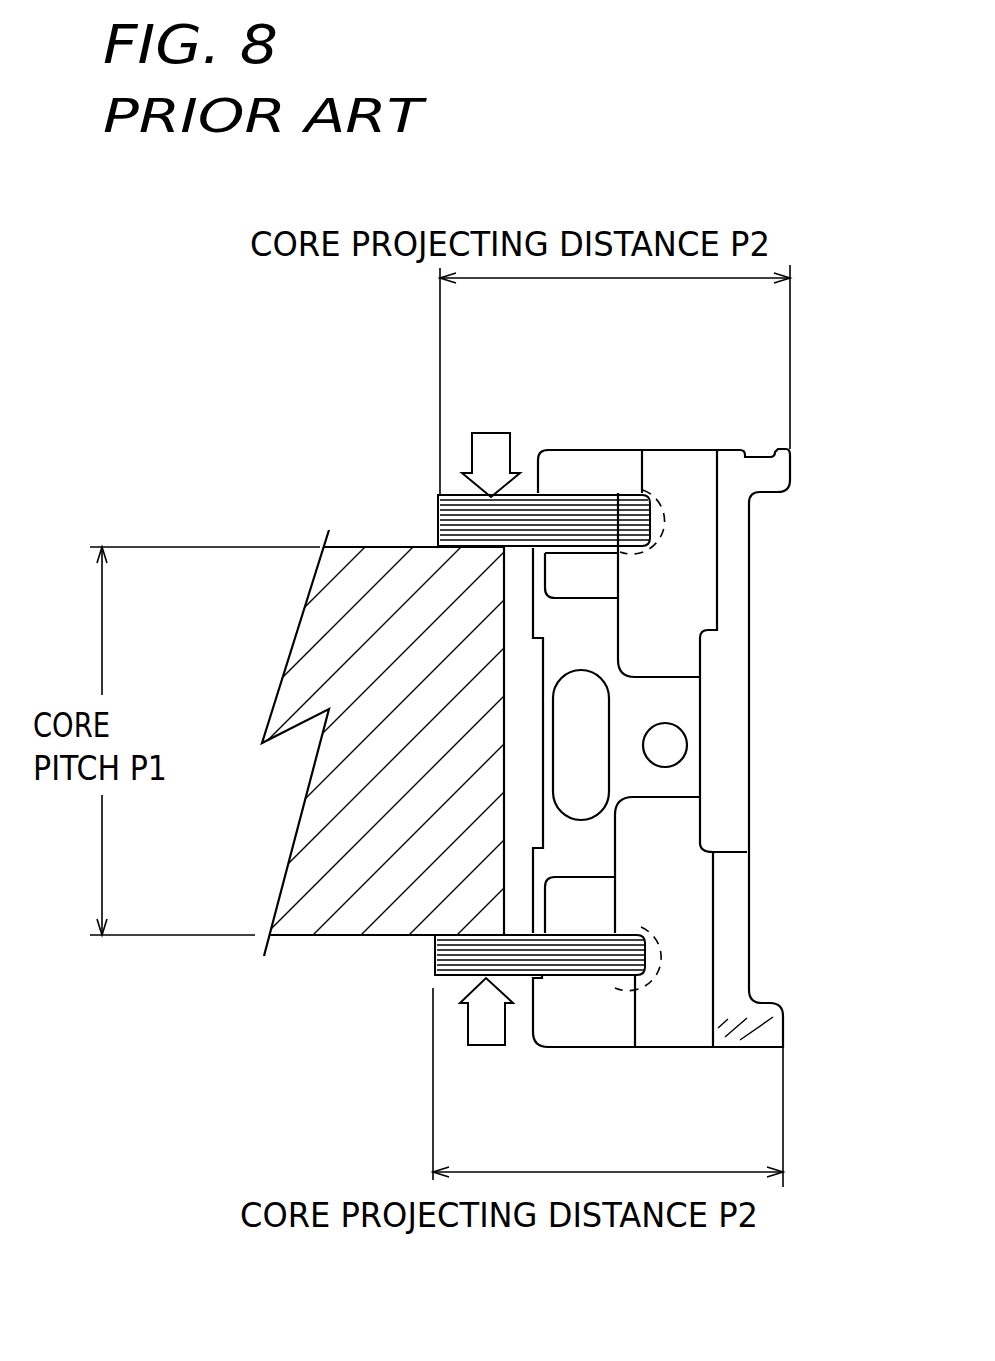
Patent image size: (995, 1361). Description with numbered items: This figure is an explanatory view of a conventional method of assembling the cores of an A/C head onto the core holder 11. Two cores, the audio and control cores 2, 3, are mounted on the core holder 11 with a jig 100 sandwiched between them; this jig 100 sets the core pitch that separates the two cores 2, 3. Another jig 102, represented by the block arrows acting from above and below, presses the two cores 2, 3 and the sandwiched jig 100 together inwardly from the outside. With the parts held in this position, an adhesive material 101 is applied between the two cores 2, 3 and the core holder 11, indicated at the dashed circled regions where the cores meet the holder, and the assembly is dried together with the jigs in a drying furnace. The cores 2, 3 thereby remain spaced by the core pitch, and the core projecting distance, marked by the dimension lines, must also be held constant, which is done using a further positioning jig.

The jig 100 is at (310, 822).
The core holder 11 is at (682, 447).
The audio core 2 is at (438, 515).
The control core 3 is at (435, 957).
The adhesive material 101 is at (666, 520).
The jig 102 is at (497, 433).